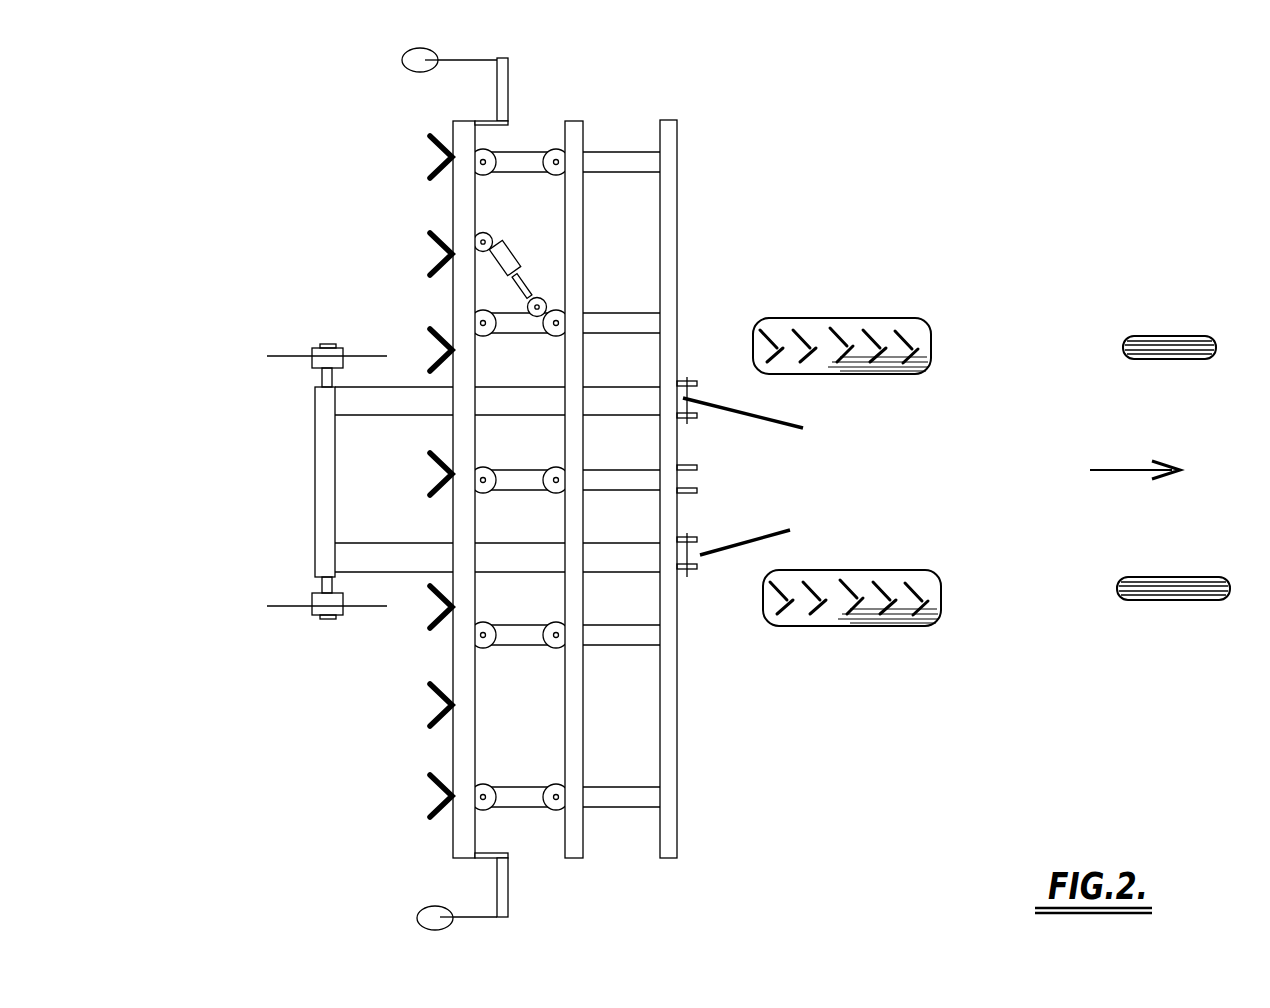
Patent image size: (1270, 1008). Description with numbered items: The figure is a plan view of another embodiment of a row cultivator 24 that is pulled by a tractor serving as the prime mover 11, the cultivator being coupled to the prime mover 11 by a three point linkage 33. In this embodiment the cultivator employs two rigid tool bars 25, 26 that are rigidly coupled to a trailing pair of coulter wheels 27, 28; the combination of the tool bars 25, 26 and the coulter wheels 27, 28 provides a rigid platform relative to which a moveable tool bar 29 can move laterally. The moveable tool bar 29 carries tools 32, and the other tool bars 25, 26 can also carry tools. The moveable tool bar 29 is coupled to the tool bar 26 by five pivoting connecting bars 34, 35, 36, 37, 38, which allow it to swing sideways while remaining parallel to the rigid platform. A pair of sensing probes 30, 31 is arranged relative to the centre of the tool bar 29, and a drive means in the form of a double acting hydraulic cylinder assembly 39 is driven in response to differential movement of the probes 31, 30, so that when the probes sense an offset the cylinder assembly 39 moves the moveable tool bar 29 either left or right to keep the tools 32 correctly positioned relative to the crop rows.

The prime mover 11 is at (1136, 228).
The row cultivator 24 is at (298, 798).
The rigid tool bar 25 is at (670, 182).
The rigid tool bar 26 is at (575, 138).
The coulter wheel 27 is at (287, 355).
The coulter wheel 28 is at (281, 606).
The moveable tool bar 29 is at (470, 637).
The sensing probe 30 is at (432, 910).
The sensing probe 31 is at (420, 56).
The tools 32 is at (418, 811).
The three point linkage 33 is at (785, 482).
The pivoting connecting bar 34 is at (523, 797).
The pivoting connecting bar 35 is at (517, 633).
The pivoting connecting bar 36 is at (518, 473).
The pivoting connecting bar 37 is at (507, 327).
The pivoting connecting bar 38 is at (505, 158).
The double acting hydraulic cylinder assembly 39 is at (512, 248).